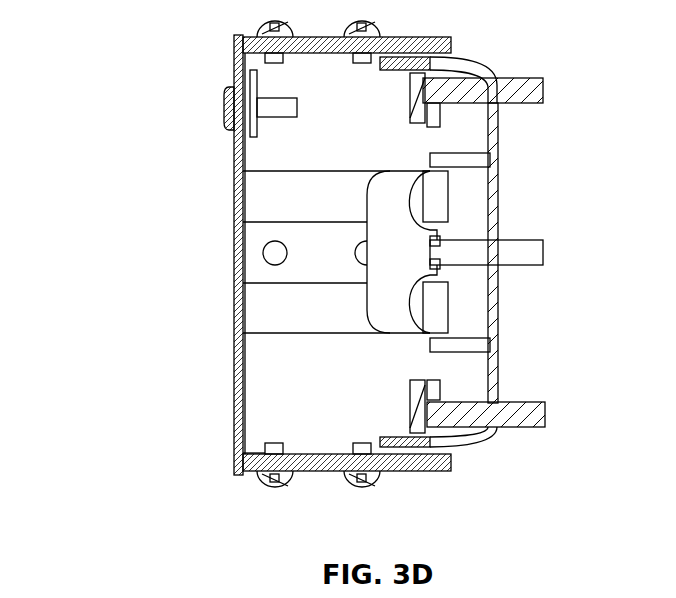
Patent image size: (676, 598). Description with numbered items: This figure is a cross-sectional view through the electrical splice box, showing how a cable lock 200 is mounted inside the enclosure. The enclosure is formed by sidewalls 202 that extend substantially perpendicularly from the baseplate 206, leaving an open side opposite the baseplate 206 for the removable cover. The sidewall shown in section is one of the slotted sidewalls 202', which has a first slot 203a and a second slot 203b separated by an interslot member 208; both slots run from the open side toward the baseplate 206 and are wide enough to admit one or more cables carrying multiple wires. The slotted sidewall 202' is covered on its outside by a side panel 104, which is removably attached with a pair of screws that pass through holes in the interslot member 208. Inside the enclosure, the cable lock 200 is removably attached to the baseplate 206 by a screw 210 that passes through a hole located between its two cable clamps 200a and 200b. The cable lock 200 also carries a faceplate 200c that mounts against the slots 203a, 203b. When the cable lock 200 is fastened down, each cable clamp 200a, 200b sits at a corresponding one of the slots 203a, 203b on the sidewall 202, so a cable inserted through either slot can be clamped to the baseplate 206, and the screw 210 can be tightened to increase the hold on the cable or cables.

The sidewall 202 is at (290, 254).
The slotted sidewall 202' is at (103, 209).
The cable lock 200 is at (388, 352).
The cable clamp 200a is at (230, 100).
The cable clamp 200b is at (410, 303).
The faceplate 200c is at (363, 212).
The first slot 203a is at (260, 202).
The second slot 203b is at (260, 319).
The interslot member 208 is at (260, 266).
The baseplate 206 is at (498, 313).
The screw 210 is at (542, 92).
The side panel 104 is at (320, 471).